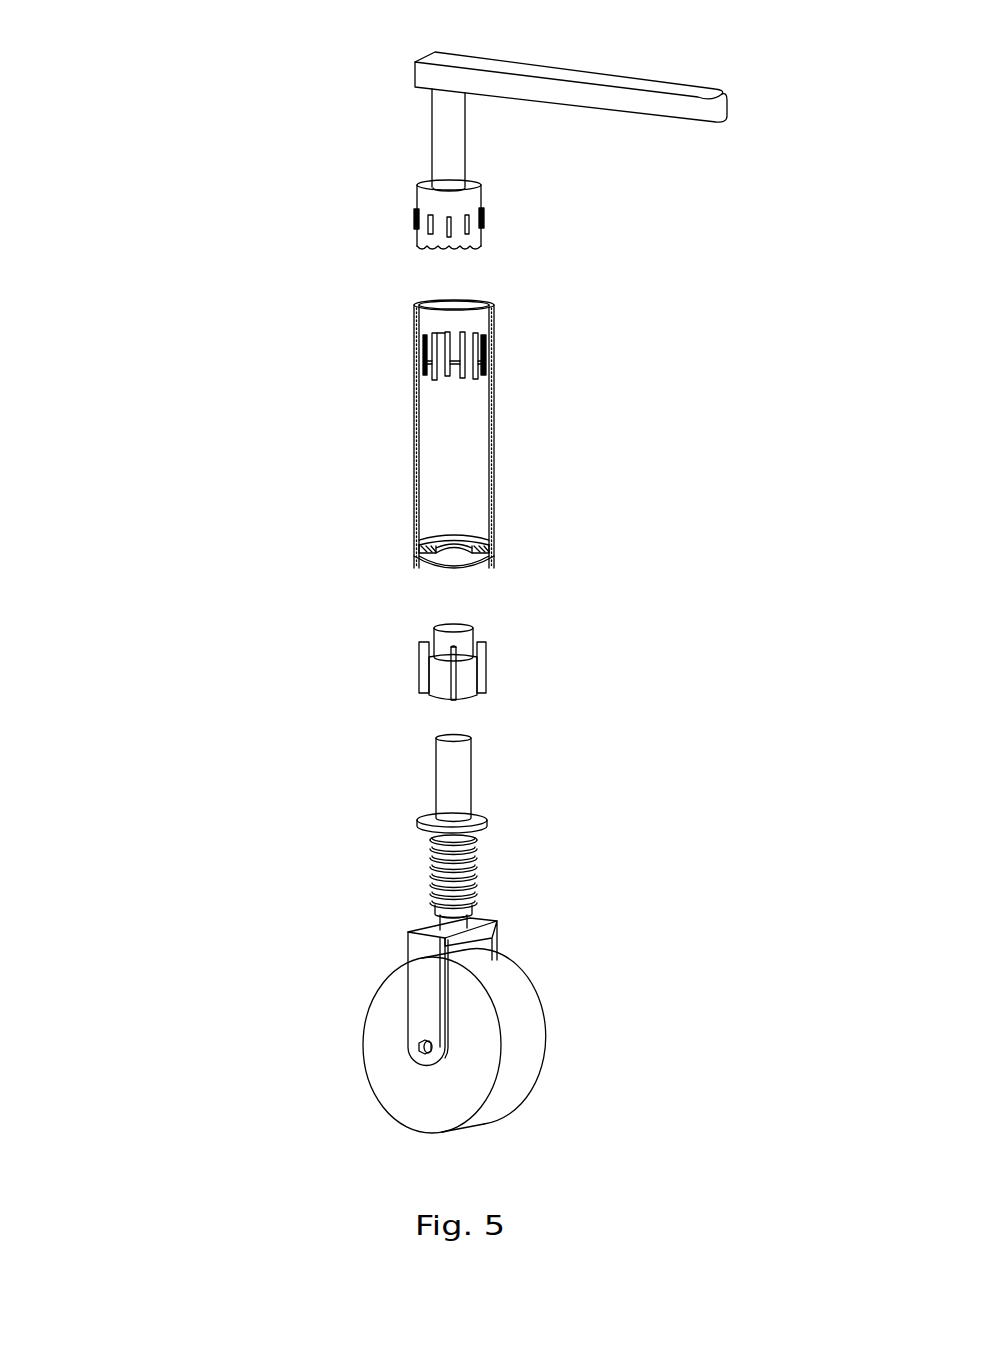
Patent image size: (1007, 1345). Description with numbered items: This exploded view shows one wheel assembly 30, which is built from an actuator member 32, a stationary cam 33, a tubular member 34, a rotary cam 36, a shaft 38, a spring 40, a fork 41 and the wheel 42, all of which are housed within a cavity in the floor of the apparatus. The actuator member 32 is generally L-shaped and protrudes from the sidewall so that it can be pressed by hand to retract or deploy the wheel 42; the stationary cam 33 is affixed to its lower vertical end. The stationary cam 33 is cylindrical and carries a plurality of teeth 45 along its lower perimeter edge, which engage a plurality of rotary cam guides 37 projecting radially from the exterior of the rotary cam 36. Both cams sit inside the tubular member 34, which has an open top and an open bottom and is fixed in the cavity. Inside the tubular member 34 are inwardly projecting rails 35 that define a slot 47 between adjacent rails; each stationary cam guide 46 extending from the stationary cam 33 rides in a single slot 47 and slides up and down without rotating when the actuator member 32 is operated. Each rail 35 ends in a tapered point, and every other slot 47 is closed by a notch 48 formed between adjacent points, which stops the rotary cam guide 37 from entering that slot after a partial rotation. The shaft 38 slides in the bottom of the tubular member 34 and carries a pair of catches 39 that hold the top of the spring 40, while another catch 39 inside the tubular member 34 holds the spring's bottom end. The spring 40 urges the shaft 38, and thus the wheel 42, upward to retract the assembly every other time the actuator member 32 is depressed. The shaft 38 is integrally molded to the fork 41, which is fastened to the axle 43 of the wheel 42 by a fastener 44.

The wheel assembly 30 is at (125, 108).
The actuator member 32 is at (553, 72).
The stationary cam 33 is at (446, 239).
The tubular member 34 is at (473, 415).
The rails 35 is at (482, 345).
The rotary cam 36 is at (453, 628).
The rotary cam guides 37 is at (456, 682).
The shaft 38 is at (453, 757).
The catches 39 is at (487, 818).
The spring 40 is at (474, 892).
The fork 41 is at (428, 925).
The wheel 42 is at (505, 990).
The axle 43 is at (418, 1042).
The fastener 44 is at (430, 1052).
The teeth 45 is at (437, 251).
The stationary cam guides 46 is at (447, 230).
The slot 47 is at (477, 375).
The notch 48 is at (440, 348).